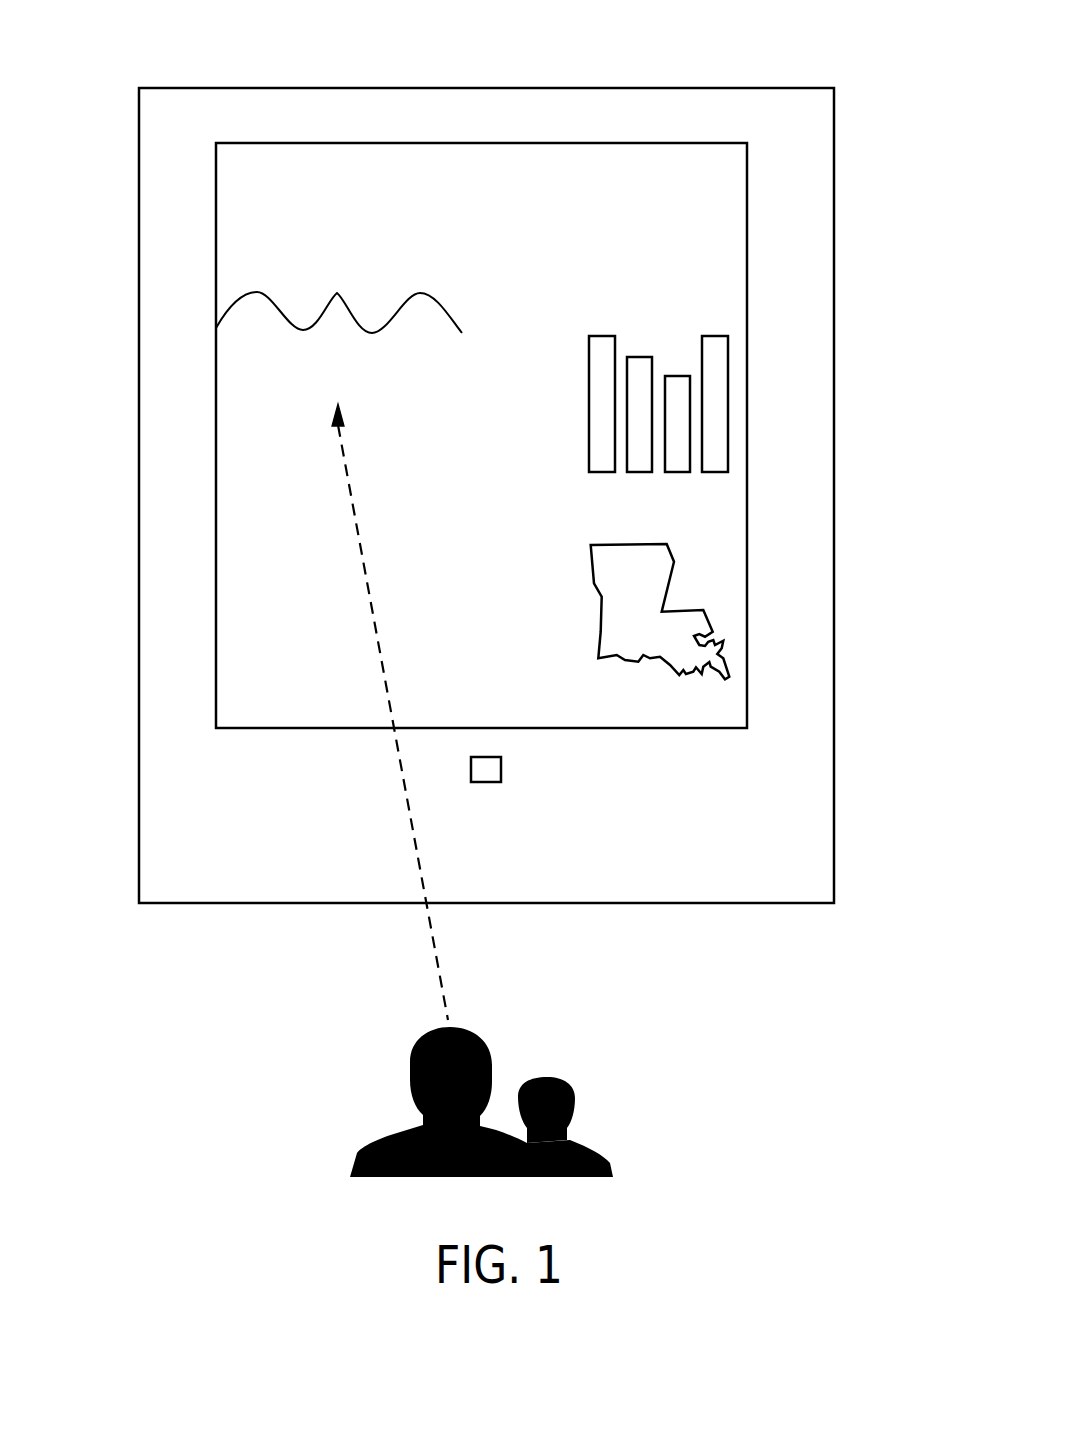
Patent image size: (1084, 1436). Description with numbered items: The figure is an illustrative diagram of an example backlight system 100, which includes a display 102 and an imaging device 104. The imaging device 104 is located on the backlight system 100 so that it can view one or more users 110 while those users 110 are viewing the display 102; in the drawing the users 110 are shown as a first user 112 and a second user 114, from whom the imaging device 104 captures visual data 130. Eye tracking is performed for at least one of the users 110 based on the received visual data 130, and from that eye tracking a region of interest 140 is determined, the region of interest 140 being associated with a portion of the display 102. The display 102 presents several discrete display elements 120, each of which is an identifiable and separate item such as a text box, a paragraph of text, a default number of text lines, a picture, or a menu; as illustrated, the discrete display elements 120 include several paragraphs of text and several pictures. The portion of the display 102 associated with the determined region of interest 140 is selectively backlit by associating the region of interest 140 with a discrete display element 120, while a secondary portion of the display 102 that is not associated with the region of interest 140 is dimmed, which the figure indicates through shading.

The backlight system 100 is at (232, 78).
The display 102 is at (347, 730).
The imaging device 104 is at (471, 768).
The users 110 is at (506, 1074).
The first user 112 is at (412, 1072).
The second user 114 is at (575, 1122).
The discrete display element 120 is at (210, 293).
The visual data 130 is at (448, 1000).
The region of interest 140 is at (338, 293).